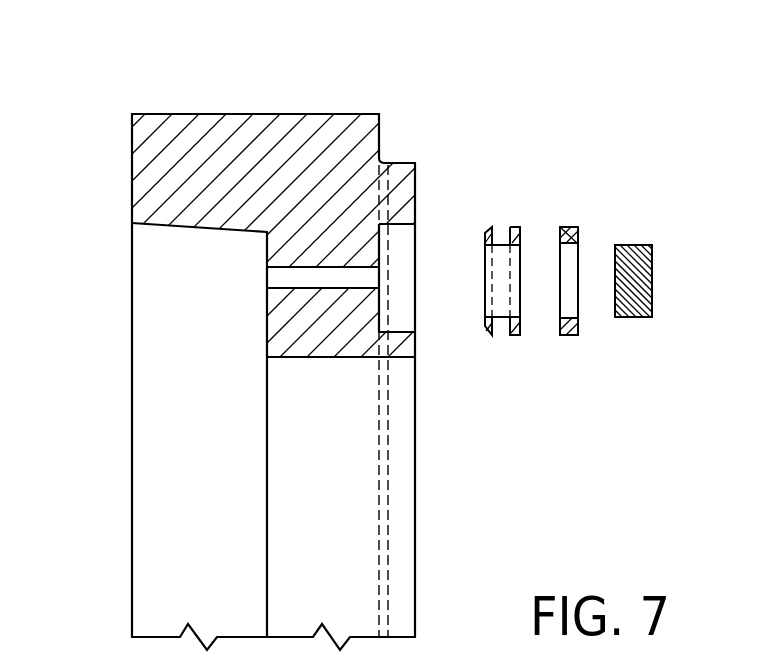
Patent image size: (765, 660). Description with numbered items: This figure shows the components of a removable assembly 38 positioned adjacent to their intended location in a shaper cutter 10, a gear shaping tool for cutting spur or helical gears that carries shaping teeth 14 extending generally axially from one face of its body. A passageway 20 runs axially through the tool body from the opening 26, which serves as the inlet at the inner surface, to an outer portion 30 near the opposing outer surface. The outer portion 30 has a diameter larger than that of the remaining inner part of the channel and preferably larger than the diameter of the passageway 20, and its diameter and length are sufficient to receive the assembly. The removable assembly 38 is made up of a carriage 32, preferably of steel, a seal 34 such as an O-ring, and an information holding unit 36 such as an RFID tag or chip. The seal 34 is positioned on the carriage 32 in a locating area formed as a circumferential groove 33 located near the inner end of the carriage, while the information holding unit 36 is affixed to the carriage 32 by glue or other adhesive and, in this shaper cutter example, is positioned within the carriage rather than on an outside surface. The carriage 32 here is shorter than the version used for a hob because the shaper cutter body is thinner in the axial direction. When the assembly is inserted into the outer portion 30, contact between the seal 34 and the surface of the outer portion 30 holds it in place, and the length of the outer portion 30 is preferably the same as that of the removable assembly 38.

The shaper cutter 10 is at (336, 328).
The shaping teeth 14 is at (157, 169).
The passageway 20 is at (302, 275).
The opening 26 is at (267, 278).
The outer portion 30 is at (398, 240).
The carriage 32 is at (518, 227).
The circumferential groove 33 is at (500, 227).
The seal 34 is at (568, 225).
The information holding unit 36 is at (670, 284).
The removable assembly 38 is at (594, 272).